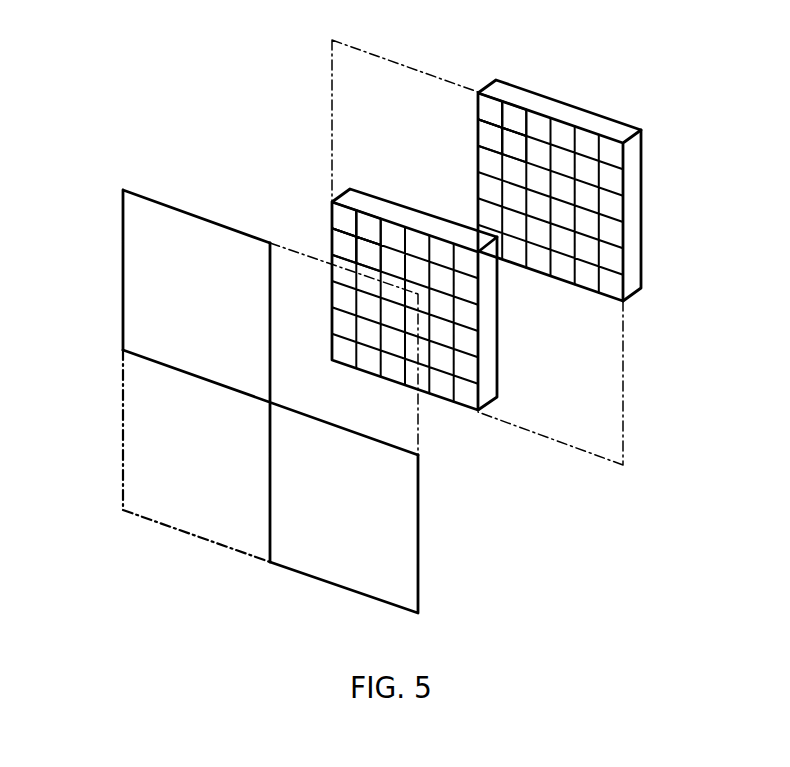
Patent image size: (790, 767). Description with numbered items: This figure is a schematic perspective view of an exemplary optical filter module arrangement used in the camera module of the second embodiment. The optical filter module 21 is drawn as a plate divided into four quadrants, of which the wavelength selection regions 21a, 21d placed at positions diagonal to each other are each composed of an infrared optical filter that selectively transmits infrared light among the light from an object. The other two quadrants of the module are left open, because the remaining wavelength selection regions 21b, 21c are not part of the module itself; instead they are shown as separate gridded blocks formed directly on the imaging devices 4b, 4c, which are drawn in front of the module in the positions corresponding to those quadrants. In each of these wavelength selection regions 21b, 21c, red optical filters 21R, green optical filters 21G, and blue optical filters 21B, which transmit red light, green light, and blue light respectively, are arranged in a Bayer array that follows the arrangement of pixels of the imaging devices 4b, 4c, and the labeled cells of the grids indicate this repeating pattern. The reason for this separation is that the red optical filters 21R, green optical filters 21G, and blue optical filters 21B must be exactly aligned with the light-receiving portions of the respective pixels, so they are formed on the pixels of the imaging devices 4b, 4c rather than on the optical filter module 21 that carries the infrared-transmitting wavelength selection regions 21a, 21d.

The optical filter module 21 is at (434, 531).
The wavelength selection region 21a is at (165, 283).
The wavelength selection region 21b is at (625, 240).
The wavelength selection region 21c is at (478, 348).
The wavelength selection region 21d is at (350, 540).
The imaging device 4b is at (632, 207).
The imaging device 4c is at (487, 318).
The red optical filter 21R is at (489, 107).
The green optical filter 21G is at (516, 118).
The blue optical filter 21B is at (513, 145).